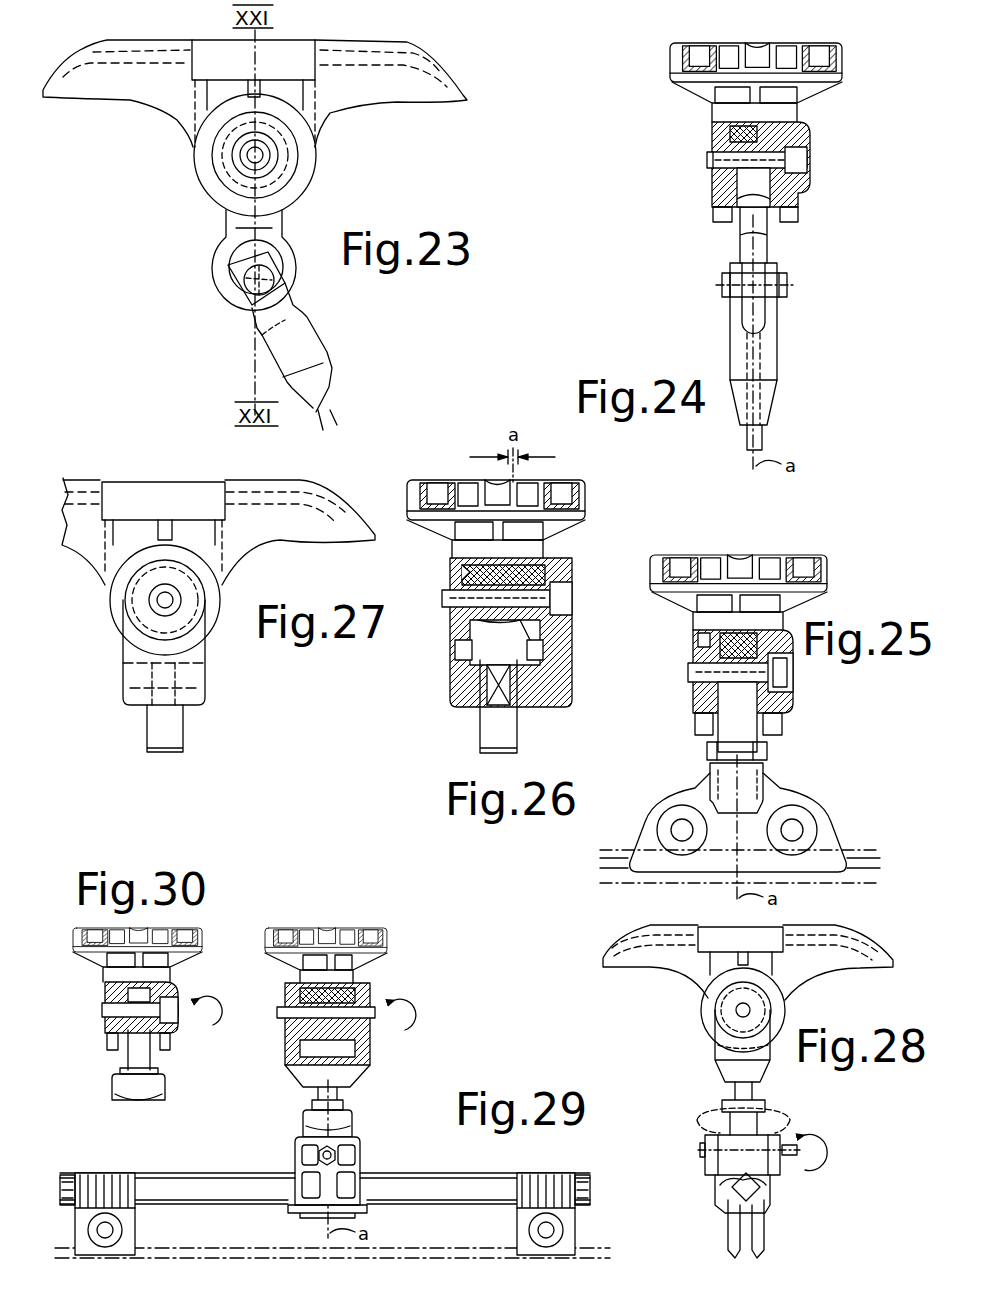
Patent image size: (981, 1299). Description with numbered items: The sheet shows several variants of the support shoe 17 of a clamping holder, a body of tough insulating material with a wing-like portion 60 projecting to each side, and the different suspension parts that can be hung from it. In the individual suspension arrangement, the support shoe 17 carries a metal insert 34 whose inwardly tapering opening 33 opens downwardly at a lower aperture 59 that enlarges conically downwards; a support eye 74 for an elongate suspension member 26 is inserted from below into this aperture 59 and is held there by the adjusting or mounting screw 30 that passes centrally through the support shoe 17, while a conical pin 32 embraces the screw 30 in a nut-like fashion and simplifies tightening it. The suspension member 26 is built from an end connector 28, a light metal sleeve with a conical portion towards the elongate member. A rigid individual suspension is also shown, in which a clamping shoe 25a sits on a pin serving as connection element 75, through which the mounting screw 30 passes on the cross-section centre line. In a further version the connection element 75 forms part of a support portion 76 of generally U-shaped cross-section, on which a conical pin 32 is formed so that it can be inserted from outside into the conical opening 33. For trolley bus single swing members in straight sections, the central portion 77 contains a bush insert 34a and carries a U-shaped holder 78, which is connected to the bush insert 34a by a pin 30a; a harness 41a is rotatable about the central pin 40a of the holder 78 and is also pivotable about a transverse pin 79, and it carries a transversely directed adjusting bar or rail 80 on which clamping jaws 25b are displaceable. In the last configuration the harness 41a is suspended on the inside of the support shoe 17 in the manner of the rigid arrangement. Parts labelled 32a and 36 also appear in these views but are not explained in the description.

In FIG. 23, the support shoe 17 is at (419, 119).
In FIG. 24, the support shoe 17 is at (653, 97).
In FIG. 27, the support shoe 17 is at (242, 690).
In FIG. 26, the support shoe 17 is at (598, 495).
In FIG. 25, the support shoe 17 is at (794, 547).
In FIG. 30, the support shoe 17 is at (208, 927).
In FIG. 29, the support shoe 17 is at (400, 952).
In FIG. 28, the support shoe 17 is at (672, 1003).
In FIG. 25, the clamping shoe 25a is at (656, 797).
In FIG. 29, the clamping jaws 25b is at (140, 1228).
In FIG. 28, the clamping jaws 25b is at (768, 1222).
In FIG. 23, the elongate suspension member 26 is at (328, 409).
In FIG. 23, the end connector 28 is at (302, 323).
In FIG. 24, the adjusting or mounting screw 30 is at (718, 158).
In FIG. 27, the adjusting or mounting screw 30 is at (165, 600).
In FIG. 26, the adjusting or mounting screw 30 is at (562, 605).
In FIG. 25, the adjusting or mounting screw 30 is at (787, 677).
In FIG. 30, the adjusting or mounting screw 30 is at (176, 1008).
In FIG. 29, the pin 30a is at (282, 1012).
In FIG. 27, the conical pin 32 is at (200, 618).
In FIG. 26, the conical pin 32 is at (555, 578).
In FIG. 24, the bearing body 32a is at (803, 135).
In FIG. 25, the bearing body 32a is at (795, 700).
In FIG. 30, the bearing body 32a is at (176, 1045).
In FIG. 24, the opening 33 is at (710, 138).
In FIG. 26, the opening 33 is at (470, 578).
In FIG. 25, the metal insert 34 is at (693, 707).
In FIG. 29, the bush insert 34a is at (295, 990).
In FIG. 25, the locking pin 36 is at (698, 640).
In FIG. 28, the central pin 40a is at (752, 1090).
In FIG. 30, the harness 41a is at (148, 1108).
In FIG. 29, the harness 41a is at (352, 1125).
In FIG. 28, the harness 41a is at (708, 1177).
In FIG. 26, the lower aperture 59 is at (495, 645).
In FIG. 25, the lower aperture 59 is at (760, 720).
In FIG. 27, the wing-like portion 60 is at (325, 515).
In FIG. 23, the support eye 74 is at (300, 210).
In FIG. 24, the support eye 74 is at (738, 222).
In FIG. 27, the connection element 75 is at (165, 735).
In FIG. 26, the connection element 75 is at (500, 732).
In FIG. 25, the connection element 75 is at (737, 730).
In FIG. 30, the connection element 75 is at (130, 1060).
In FIG. 27, the support portion 76 is at (120, 712).
In FIG. 26, the support portion 76 is at (446, 712).
In FIG. 29, the central portion 77 is at (358, 985).
In FIG. 28, the central portion 77 is at (778, 1005).
In FIG. 29, the U-shaped holder 78 is at (368, 1052).
In FIG. 28, the U-shaped holder 78 is at (720, 1055).
In FIG. 29, the transverse pin 79 is at (340, 1155).
In FIG. 28, the transverse pin 79 is at (705, 1152).
In FIG. 29, the adjusting bar or rail 80 is at (233, 1183).
In FIG. 28, the adjusting bar or rail 80 is at (752, 1187).